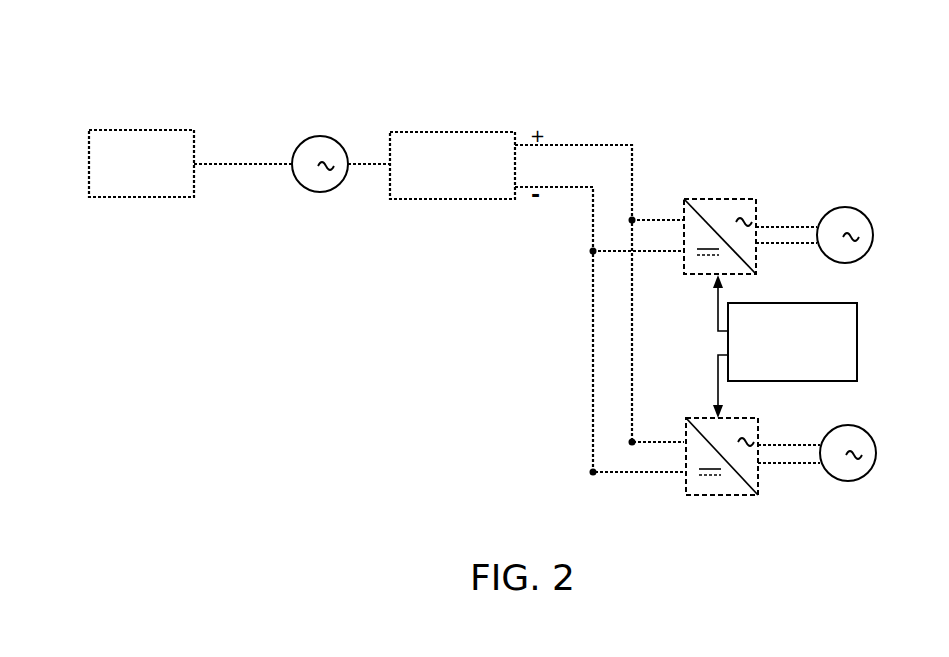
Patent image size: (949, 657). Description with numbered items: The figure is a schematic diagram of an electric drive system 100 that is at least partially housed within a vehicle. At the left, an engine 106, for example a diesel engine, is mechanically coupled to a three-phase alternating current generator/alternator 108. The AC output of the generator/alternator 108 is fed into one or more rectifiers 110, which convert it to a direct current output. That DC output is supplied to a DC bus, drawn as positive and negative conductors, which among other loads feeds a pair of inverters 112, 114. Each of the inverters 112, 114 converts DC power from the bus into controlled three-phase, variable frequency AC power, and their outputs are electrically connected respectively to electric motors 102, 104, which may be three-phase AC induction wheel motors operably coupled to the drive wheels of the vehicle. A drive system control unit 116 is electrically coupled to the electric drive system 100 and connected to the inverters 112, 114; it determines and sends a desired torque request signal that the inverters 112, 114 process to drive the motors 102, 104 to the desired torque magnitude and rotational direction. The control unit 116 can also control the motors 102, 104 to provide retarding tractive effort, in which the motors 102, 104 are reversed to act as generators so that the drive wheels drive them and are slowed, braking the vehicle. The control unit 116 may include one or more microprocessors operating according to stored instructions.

The electric drive system 100 is at (663, 53).
The electric motor 102 is at (845, 207).
The electric motor 104 is at (848, 481).
The engine 106 is at (138, 130).
The generator/alternator 108 is at (320, 136).
The rectifiers 110 is at (450, 132).
The inverter 112 is at (720, 199).
The inverter 114 is at (722, 495).
The drive system control unit 116 is at (857, 341).